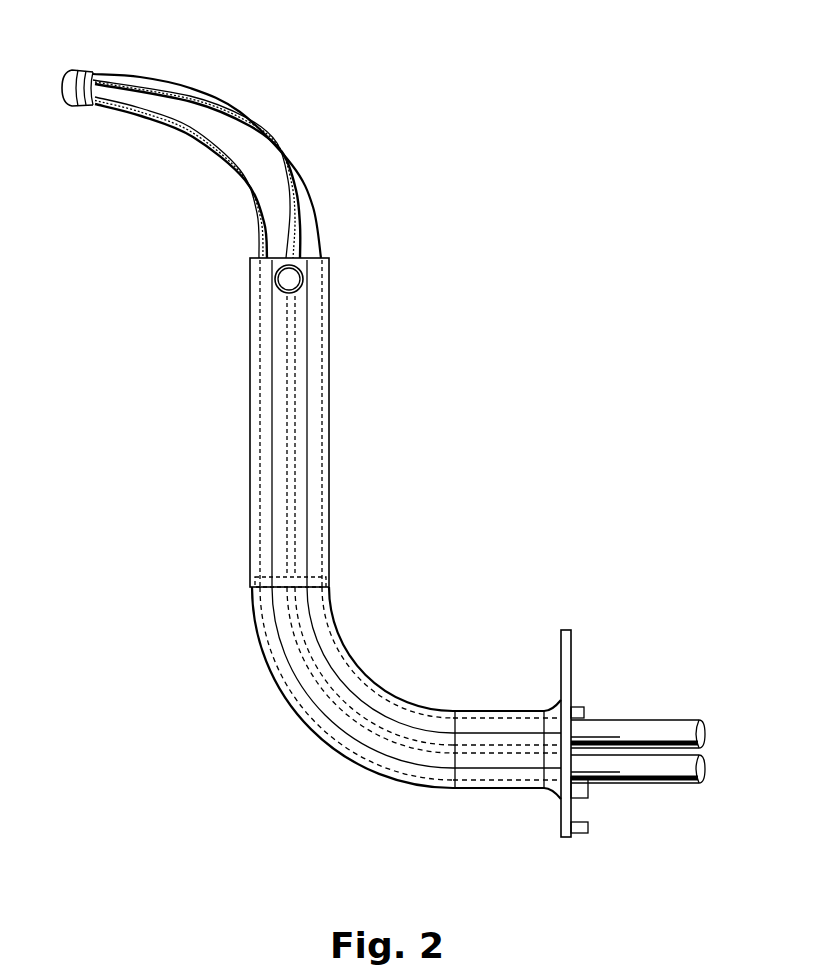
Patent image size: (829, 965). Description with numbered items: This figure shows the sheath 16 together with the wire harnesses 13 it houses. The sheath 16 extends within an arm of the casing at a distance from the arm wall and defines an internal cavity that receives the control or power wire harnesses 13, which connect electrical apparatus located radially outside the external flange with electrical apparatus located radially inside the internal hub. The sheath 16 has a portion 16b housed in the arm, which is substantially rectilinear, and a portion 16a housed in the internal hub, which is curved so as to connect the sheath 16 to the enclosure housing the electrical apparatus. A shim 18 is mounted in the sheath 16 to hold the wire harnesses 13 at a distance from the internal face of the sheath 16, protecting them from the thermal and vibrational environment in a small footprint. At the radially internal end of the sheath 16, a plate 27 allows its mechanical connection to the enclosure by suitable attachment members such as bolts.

The wire harnesses 13 is at (278, 146).
The sheath 16 is at (336, 421).
The portion of the sheath housed in the internal hub 16a is at (402, 752).
The portion of the sheath housed in the arm 16b is at (278, 468).
The shim 18 is at (310, 571).
The plate 27 is at (565, 623).